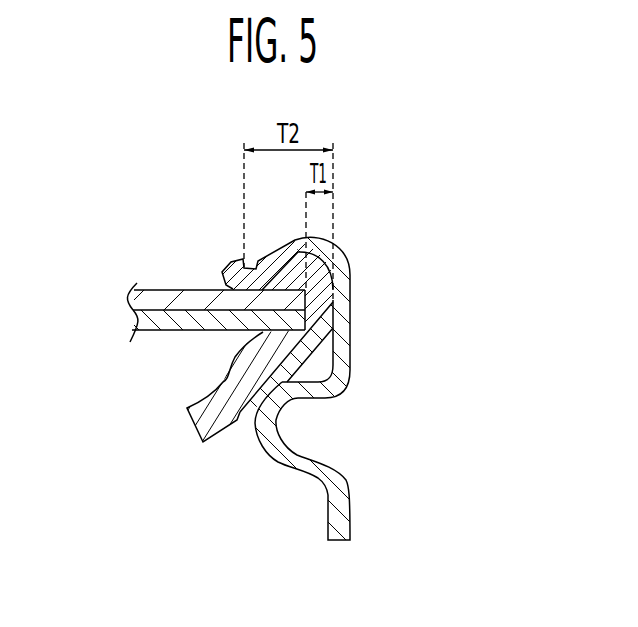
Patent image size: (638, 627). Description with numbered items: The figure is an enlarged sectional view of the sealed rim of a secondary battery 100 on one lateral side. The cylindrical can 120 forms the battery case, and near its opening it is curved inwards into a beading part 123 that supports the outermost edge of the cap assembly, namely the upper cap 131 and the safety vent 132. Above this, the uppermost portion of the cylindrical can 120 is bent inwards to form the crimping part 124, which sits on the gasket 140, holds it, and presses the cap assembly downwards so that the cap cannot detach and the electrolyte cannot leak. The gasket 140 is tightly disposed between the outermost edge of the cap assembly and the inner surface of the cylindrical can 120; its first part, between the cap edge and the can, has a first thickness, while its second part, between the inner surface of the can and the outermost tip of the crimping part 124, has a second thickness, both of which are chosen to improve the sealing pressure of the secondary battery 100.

The secondary battery 100 is at (483, 122).
The battery case (cylindrical can) 120 is at (287, 461).
The beading part 123 is at (317, 424).
The crimping part 124 is at (247, 266).
The upper cap 131 is at (133, 292).
The safety vent 132 is at (133, 318).
The gasket 140 is at (197, 423).